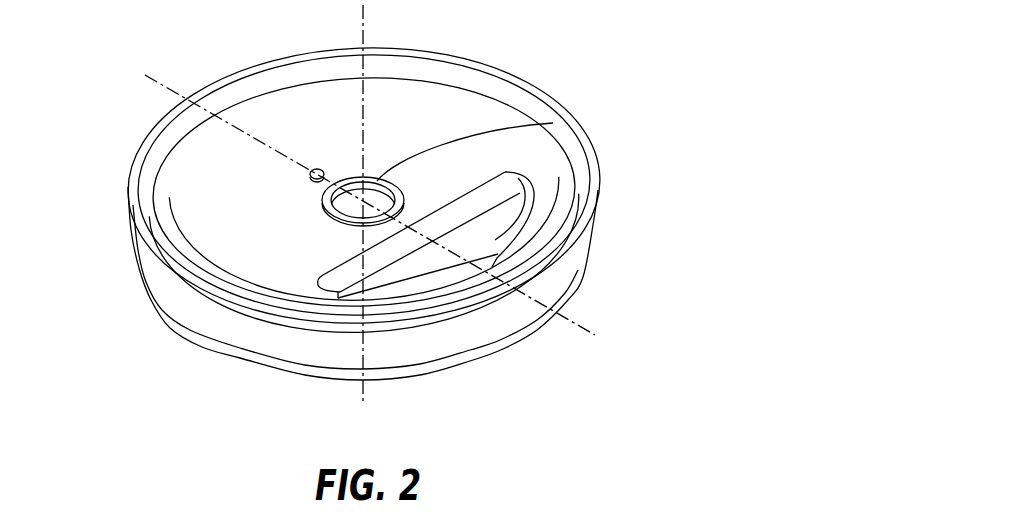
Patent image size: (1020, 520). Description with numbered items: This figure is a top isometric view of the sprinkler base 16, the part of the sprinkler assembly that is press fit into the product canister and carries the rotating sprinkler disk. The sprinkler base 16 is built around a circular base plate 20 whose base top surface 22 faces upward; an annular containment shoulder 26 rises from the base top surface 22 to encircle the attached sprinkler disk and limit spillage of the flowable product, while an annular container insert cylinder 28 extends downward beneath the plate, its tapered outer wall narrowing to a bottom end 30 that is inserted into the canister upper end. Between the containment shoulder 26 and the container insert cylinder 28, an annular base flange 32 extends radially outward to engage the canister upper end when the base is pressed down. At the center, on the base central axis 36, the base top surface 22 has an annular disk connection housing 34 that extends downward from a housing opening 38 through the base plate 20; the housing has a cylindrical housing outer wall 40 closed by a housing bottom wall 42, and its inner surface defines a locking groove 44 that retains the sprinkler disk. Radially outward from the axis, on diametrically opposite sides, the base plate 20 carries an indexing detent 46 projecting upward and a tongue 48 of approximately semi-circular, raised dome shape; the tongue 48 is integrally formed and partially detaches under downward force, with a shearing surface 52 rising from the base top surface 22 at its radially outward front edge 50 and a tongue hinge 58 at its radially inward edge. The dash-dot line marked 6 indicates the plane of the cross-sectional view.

The sprinkler base 16 is at (635, 60).
The base plate 20 is at (364, 176).
The base top surface 22 is at (457, 103).
The containment shoulder 26 is at (427, 55).
The container insert cylinder 28 is at (167, 293).
The bottom end 30 is at (273, 370).
The base flange 32 is at (590, 205).
The disk connection housing 34 is at (314, 260).
The base central axis 36 is at (364, 28).
The housing opening 38 is at (347, 177).
The housing outer wall 40 is at (526, 146).
The housing bottom wall 42 is at (324, 204).
The locking groove 44 is at (553, 123).
The indexing detent 46 is at (316, 169).
The tongue 48 is at (393, 262).
The front edge 50 is at (393, 253).
The shearing surface 52 is at (393, 262).
The tongue hinge 58 is at (493, 223).
The section line 6- 6 is at (145, 75).